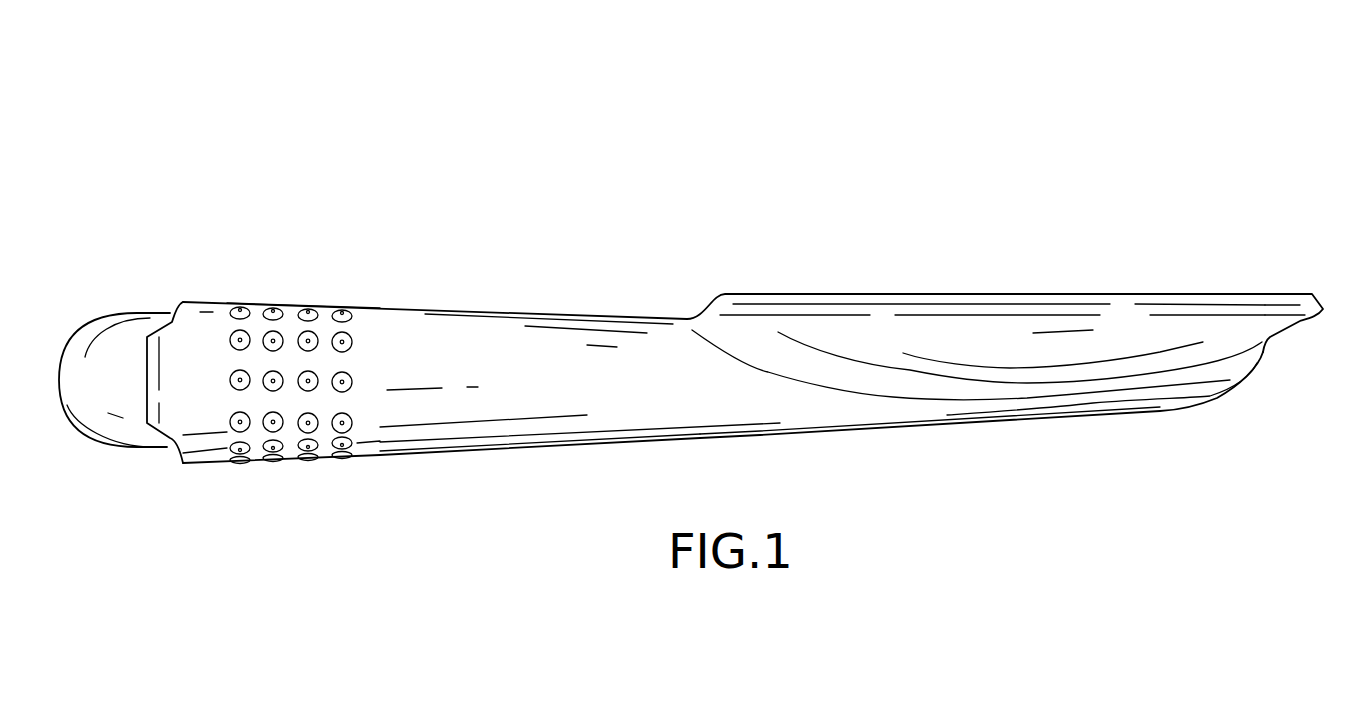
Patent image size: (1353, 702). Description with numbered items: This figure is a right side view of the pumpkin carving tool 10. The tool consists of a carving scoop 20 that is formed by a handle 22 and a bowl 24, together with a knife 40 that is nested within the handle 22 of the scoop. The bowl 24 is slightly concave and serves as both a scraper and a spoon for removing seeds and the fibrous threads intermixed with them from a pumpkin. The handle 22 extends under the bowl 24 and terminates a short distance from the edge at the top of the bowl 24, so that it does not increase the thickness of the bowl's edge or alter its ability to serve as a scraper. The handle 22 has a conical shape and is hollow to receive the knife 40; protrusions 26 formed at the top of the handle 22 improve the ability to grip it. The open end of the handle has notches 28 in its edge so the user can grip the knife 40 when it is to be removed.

The pumpkin carving tool 10 is at (1196, 103).
The carving scoop 20 is at (1248, 292).
The handle 22 is at (462, 268).
The bowl 24 is at (927, 283).
The protrusions 26 is at (240, 472).
The notches 28 is at (173, 305).
The knife 40 is at (120, 307).